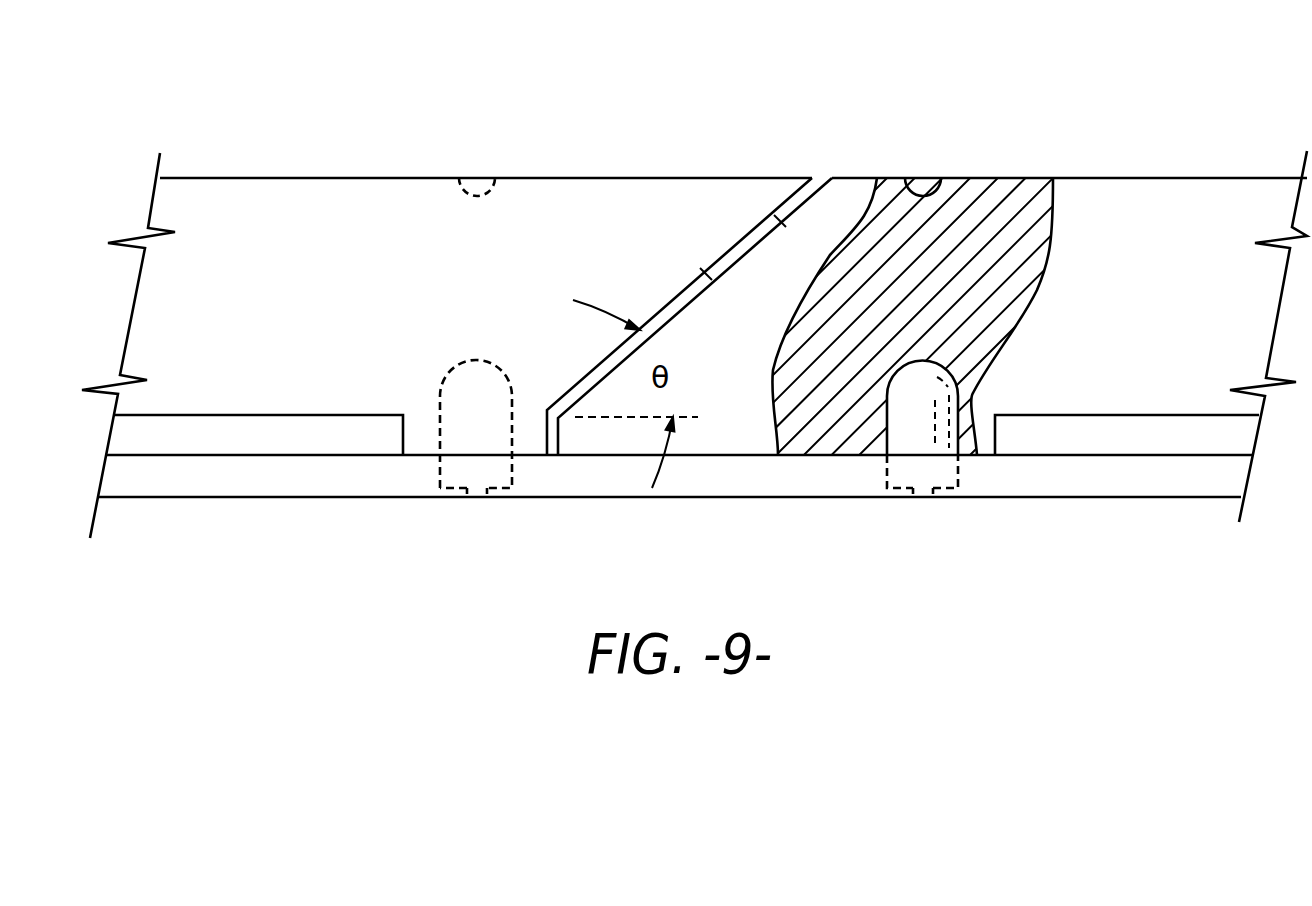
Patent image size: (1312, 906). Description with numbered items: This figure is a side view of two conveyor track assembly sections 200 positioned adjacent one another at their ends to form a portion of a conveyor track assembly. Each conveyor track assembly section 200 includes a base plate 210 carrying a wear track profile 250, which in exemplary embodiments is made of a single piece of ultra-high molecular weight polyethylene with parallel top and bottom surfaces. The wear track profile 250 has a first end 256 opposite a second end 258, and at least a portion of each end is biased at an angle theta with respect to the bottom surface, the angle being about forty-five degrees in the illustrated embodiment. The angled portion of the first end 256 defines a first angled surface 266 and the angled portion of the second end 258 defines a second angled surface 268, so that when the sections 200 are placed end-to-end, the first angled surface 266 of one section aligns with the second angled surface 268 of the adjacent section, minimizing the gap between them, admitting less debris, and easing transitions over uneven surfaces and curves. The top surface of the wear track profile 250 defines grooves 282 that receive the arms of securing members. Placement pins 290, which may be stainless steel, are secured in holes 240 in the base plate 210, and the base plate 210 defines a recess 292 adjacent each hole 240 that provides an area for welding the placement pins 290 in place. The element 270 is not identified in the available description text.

The conveyor track assembly section 200 is at (433, 113).
The base plate 210 is at (265, 483).
The hole 240 is at (513, 470).
The wear track profile 250 is at (246, 207).
The first end 256 is at (877, 143).
The second end 258 is at (653, 142).
The first angled surface 266 is at (781, 221).
The second angled surface 268 is at (705, 275).
The insulation panel 270 is at (420, 442).
The groove 282 is at (477, 190).
The placement pin 290 is at (905, 412).
The recess 292 is at (477, 496).